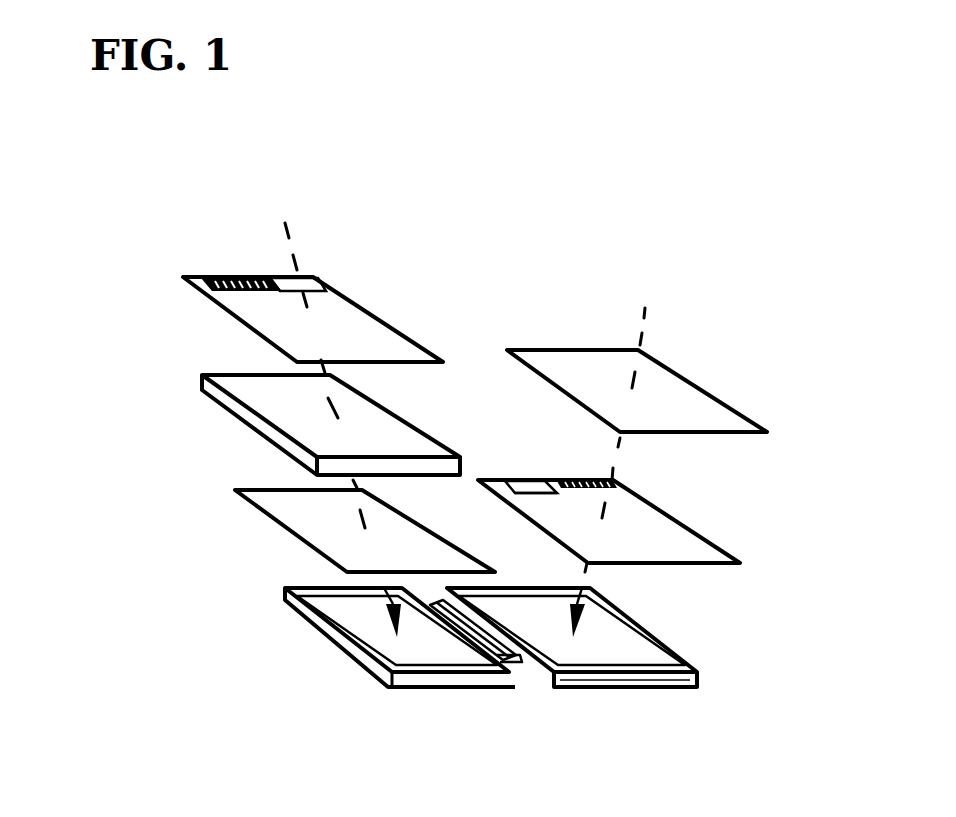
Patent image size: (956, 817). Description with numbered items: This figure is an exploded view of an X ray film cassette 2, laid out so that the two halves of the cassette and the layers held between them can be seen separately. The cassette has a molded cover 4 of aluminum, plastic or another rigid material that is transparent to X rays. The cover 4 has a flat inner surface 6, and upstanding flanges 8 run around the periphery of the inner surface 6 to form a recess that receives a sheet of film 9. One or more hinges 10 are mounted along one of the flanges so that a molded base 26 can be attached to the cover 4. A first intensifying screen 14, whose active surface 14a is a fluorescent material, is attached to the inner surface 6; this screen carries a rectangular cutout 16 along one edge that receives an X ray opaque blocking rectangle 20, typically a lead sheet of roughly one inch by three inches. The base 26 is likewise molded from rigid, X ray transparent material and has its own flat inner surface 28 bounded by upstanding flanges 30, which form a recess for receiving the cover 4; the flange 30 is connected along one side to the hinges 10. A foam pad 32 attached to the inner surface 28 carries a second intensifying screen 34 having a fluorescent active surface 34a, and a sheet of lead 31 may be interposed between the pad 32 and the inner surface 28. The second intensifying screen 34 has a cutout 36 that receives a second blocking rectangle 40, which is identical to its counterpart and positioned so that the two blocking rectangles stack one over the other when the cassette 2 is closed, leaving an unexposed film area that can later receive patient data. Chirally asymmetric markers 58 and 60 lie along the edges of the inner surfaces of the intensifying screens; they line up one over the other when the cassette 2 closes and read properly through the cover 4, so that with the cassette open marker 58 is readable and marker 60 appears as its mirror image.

The X ray film cassette 2 is at (436, 506).
The molded cover 4 is at (593, 687).
The flat inner surface 6 is at (610, 657).
The upstanding flanges 8 is at (703, 672).
The sheet of film 9 is at (680, 419).
The hinges 10 is at (513, 655).
The first intensifying screen 14 is at (637, 493).
The active surface 14a is at (672, 551).
The rectangular cutout 16 is at (504, 482).
The blocking rectangle 20 is at (532, 485).
The marker 60 is at (597, 480).
The molded base 26 is at (430, 688).
The flat inner surface 28 is at (452, 664).
The upstanding flanges 30 is at (317, 630).
The sheet of lead 31 is at (417, 567).
The foam pad 32 is at (390, 444).
The second intensifying screen 34 is at (241, 320).
The active surface 34a is at (377, 351).
The cutout 36 is at (269, 277).
The blocking rectangle 40 is at (280, 280).
The marker 58 is at (227, 277).